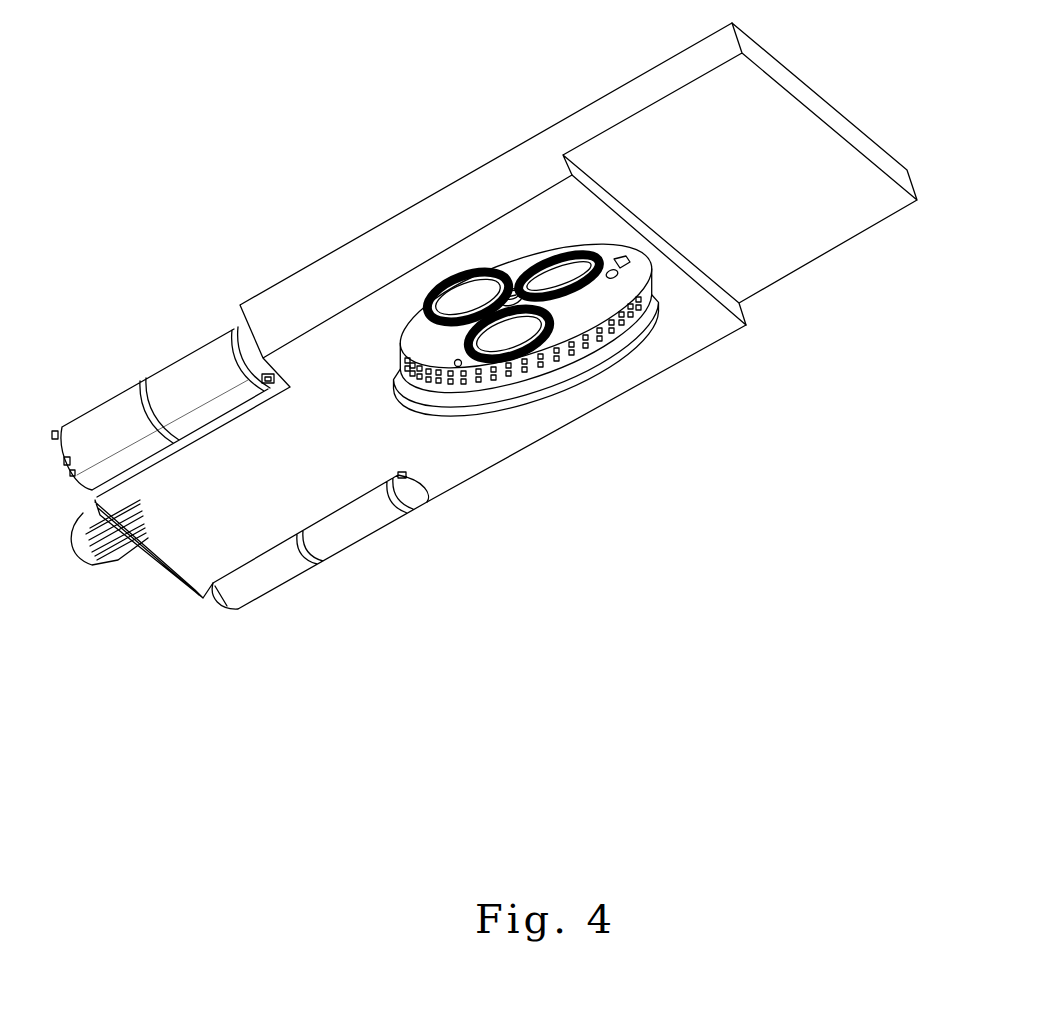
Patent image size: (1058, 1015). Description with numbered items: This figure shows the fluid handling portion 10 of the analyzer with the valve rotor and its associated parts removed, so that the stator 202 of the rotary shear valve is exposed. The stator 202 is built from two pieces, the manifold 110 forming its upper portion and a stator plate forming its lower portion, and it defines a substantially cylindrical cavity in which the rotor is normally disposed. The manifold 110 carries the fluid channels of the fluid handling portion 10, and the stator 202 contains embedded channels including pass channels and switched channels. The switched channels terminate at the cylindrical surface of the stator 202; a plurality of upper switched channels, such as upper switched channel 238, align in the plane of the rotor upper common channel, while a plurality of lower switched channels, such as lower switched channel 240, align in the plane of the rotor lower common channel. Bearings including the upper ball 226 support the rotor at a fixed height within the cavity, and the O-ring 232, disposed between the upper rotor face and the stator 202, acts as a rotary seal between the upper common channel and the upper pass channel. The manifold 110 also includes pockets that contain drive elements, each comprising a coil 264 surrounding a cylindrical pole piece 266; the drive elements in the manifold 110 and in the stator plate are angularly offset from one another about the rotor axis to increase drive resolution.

The fluid handling portion 10 is at (484, 335).
The manifold 110 is at (517, 177).
The stator 202 is at (517, 406).
The upper ball 226 is at (455, 364).
The O-ring 232 is at (562, 325).
The upper switched channel 238 is at (533, 370).
The lower switched channel 240 is at (528, 378).
The coil 264 is at (503, 361).
The cylindrical pole piece 266 is at (508, 334).